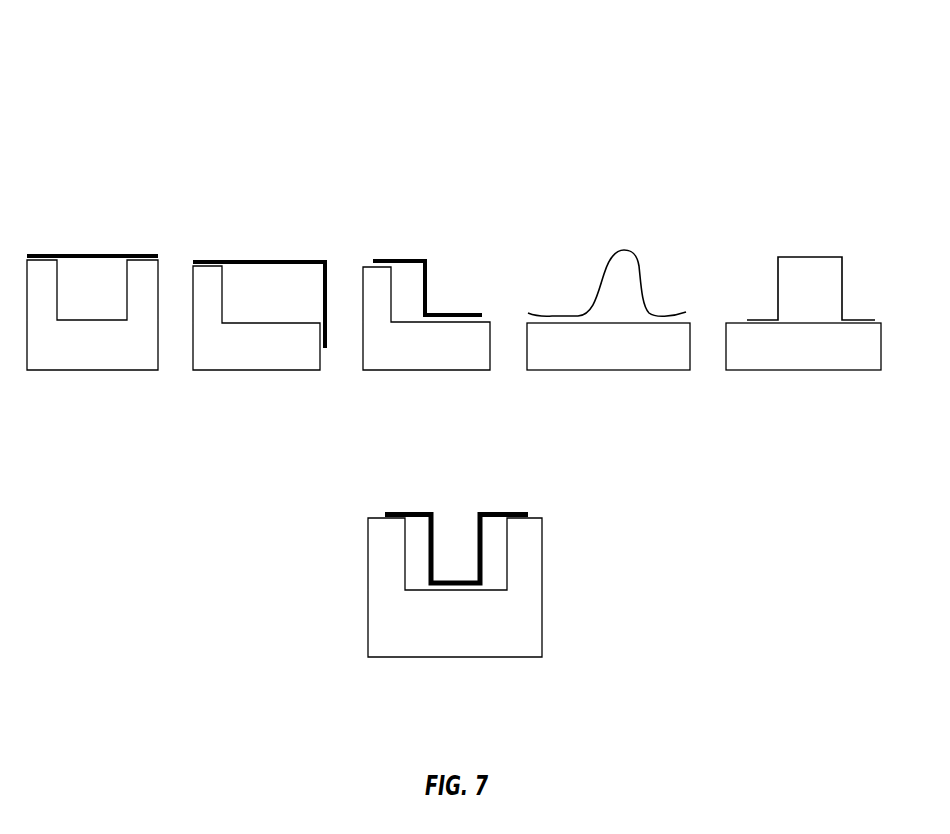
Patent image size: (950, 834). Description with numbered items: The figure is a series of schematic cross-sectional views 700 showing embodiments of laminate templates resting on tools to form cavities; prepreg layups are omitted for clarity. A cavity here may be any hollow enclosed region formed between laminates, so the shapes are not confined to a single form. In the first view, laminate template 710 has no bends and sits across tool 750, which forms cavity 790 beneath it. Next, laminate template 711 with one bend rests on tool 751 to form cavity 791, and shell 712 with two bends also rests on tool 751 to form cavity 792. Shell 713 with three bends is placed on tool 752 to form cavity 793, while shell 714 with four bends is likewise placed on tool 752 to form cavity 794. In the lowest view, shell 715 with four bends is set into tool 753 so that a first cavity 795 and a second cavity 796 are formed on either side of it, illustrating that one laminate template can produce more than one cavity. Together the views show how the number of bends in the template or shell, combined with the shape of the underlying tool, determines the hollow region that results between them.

The schematic cross-sectional views 700 is at (96, 90).
The laminate template 710 is at (114, 256).
The laminate template 711 is at (287, 261).
The shell 712 is at (423, 260).
The shell 713 is at (626, 250).
The shell 714 is at (815, 257).
The shell 715 is at (497, 512).
The tool 750 is at (112, 355).
The tool 751 is at (273, 355).
The tool 752 is at (622, 358).
The tool 753 is at (468, 637).
The cavity 790 is at (97, 292).
The cavity 791 is at (270, 292).
The cavity 792 is at (411, 292).
The cavity 793 is at (617, 292).
The cavity 794 is at (798, 292).
The first cavity 795 is at (415, 565).
The second cavity 796 is at (487, 565).